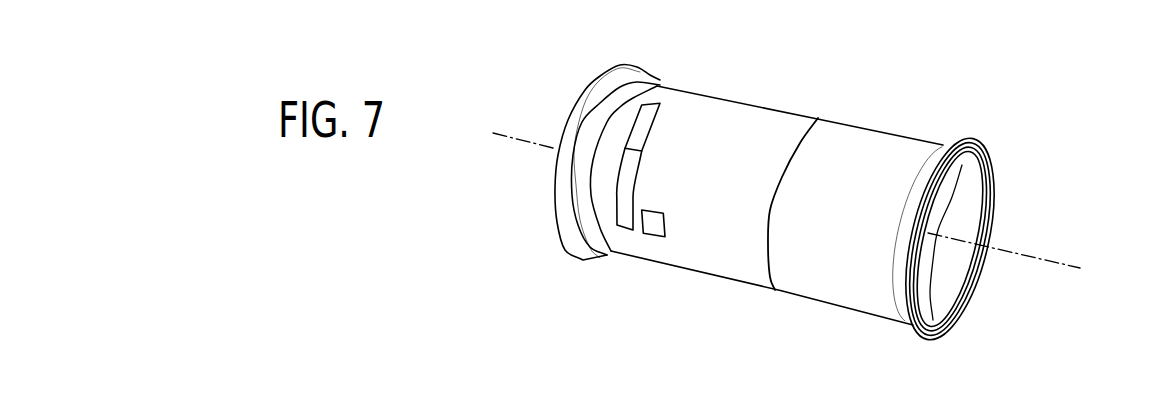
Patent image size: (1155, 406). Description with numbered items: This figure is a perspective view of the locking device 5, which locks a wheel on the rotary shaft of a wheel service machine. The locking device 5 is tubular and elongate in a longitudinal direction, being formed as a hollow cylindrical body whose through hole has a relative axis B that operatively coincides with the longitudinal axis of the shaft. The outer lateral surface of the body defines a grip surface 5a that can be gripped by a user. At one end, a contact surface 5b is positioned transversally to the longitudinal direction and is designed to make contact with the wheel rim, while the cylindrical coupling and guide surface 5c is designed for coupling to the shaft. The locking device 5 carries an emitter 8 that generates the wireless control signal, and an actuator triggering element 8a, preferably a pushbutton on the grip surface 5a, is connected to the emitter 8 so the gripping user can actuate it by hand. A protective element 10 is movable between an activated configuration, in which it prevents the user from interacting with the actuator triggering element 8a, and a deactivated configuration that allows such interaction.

The locking device 5 is at (919, 108).
The grip surface 5a is at (847, 287).
The contact surface 5b is at (564, 120).
The coupling and guide surface 5c is at (948, 208).
The emitter 8 is at (651, 113).
The actuator triggering element 8a is at (651, 230).
The protective element 10 is at (622, 215).
The axis B is at (1050, 261).